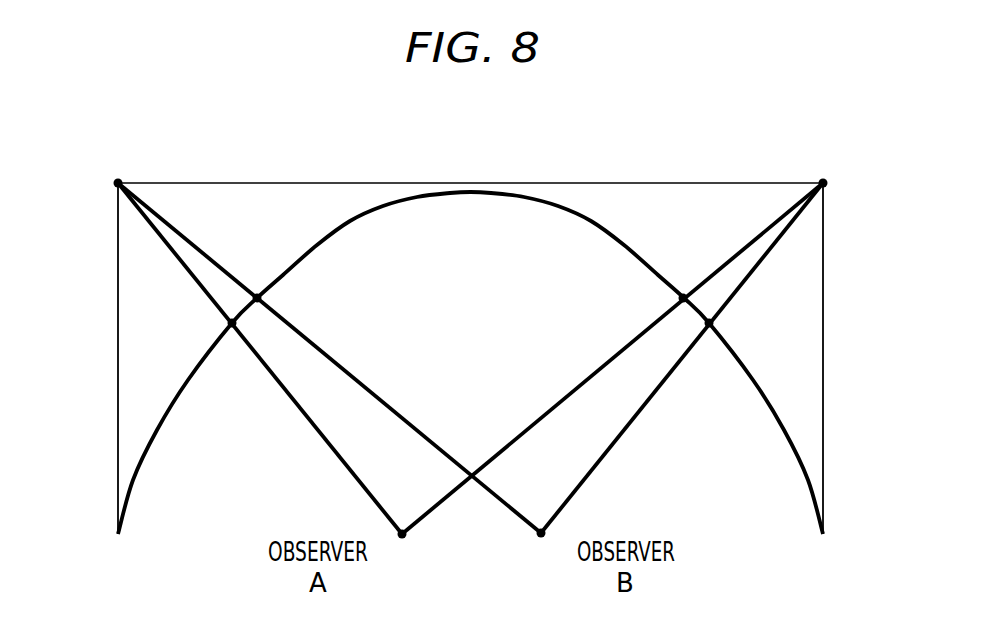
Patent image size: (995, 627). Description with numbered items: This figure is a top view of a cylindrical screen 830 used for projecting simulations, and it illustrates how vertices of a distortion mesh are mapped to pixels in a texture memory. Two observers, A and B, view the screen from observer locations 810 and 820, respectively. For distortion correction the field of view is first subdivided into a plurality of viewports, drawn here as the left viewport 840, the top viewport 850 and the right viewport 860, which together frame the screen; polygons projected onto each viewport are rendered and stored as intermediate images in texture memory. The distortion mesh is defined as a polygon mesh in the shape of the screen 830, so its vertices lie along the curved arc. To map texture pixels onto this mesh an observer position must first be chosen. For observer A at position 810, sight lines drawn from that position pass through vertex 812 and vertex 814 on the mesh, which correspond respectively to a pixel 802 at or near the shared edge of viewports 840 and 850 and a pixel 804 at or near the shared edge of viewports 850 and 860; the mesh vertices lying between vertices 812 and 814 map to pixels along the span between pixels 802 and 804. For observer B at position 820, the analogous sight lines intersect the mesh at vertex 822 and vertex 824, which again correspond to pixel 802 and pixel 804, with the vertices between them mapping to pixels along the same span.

The pixel 802 is at (118, 183).
The pixel 804 is at (823, 183).
The observer location 810 is at (402, 538).
The observer location 820 is at (541, 537).
The vertex 812 is at (232, 323).
The vertex 822 is at (257, 298).
The vertex 814 is at (683, 298).
The vertex 824 is at (709, 323).
The cylindrical screen 830 is at (393, 210).
The viewport 840 is at (118, 328).
The viewport 850 is at (340, 183).
The viewport 860 is at (823, 318).